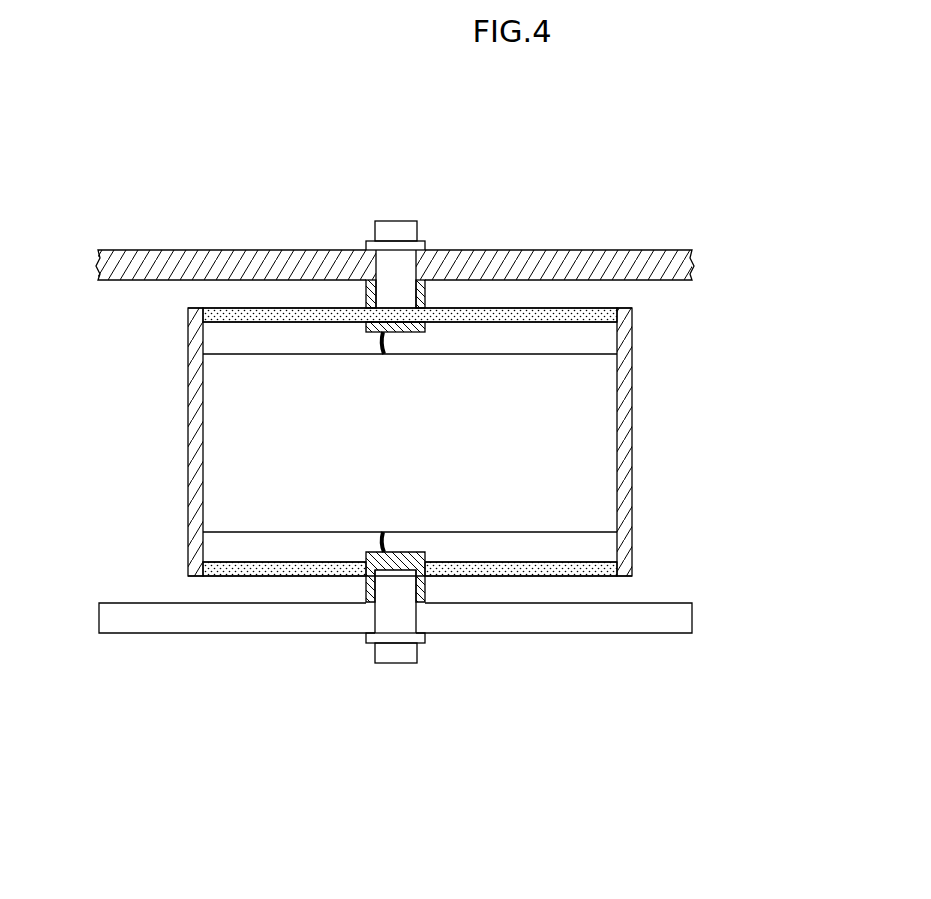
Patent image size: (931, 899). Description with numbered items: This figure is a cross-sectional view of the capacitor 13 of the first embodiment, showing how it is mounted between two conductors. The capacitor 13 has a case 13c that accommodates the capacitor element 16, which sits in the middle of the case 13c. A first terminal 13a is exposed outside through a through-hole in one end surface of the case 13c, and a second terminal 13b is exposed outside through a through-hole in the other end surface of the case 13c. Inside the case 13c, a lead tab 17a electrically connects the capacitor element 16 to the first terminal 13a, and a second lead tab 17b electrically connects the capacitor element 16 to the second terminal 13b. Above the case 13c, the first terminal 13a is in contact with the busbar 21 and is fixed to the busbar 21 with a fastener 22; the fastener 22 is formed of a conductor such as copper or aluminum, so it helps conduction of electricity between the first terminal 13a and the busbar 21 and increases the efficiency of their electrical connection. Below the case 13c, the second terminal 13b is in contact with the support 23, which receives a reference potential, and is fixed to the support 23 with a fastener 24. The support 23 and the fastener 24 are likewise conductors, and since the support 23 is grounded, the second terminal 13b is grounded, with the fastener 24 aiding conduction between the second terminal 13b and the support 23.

The capacitor 13 is at (482, 423).
The first terminal 13a is at (367, 297).
The second terminal 13b is at (370, 605).
The case 13c is at (622, 428).
The capacitor element 16 is at (558, 508).
The lead tab 17a is at (384, 347).
The lead tab 17b is at (386, 546).
The busbar 21 is at (545, 250).
The fastener 22 is at (402, 225).
The support 23 is at (682, 623).
The fastener 24 is at (400, 652).